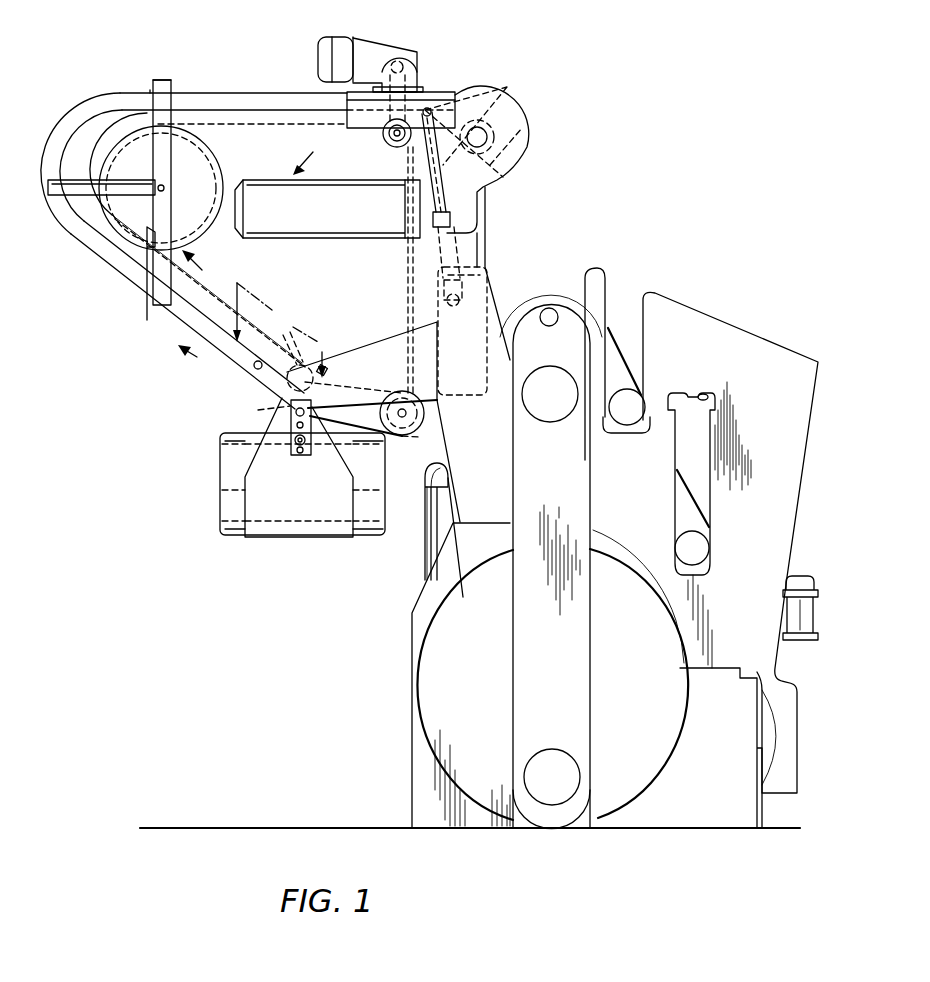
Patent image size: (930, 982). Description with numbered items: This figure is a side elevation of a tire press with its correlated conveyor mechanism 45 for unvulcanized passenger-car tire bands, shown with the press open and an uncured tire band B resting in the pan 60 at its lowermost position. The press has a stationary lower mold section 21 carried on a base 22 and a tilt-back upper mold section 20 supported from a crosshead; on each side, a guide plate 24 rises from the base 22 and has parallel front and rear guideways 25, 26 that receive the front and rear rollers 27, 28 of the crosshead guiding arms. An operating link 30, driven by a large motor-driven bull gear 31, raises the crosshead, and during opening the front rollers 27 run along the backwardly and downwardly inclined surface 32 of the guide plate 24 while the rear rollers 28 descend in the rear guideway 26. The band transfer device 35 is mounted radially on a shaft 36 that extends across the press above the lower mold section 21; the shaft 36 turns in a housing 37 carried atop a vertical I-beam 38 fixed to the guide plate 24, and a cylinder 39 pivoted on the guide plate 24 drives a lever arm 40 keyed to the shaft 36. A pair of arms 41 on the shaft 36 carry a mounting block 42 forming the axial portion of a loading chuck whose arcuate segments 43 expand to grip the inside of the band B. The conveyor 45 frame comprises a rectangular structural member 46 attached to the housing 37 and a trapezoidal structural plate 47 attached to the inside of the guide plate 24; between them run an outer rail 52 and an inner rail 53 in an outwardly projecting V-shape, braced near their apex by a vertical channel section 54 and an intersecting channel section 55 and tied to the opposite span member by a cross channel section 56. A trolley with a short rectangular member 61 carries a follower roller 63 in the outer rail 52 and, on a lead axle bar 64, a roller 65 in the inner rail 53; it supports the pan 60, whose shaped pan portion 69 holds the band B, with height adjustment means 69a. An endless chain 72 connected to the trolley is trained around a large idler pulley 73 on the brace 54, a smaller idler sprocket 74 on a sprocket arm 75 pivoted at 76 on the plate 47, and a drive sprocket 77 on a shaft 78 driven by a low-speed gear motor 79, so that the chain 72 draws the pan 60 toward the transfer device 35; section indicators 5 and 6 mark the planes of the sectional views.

The upper mold section 20 is at (433, 530).
The lower mold section 21 is at (430, 560).
The base 22 is at (697, 830).
The guide plate 24 is at (450, 452).
The front guideway 25 is at (638, 348).
The rear guideway 26 is at (703, 393).
The front roller 27 is at (633, 405).
The rear roller 28 is at (707, 552).
The operating link 30 is at (582, 652).
The bull gear 31 is at (663, 727).
The inclined surface 32 is at (730, 322).
The transfer device 35 is at (308, 154).
The shaft 36 is at (497, 134).
The housing 37 is at (505, 163).
The vertical I-beam 38 is at (477, 240).
The cylinder 39 is at (487, 272).
The lever arm 40 is at (488, 103).
The arms 41 is at (503, 188).
The mounting block 42 is at (432, 222).
The arcuate segments 43 is at (306, 190).
The conveyor mechanism 45 is at (199, 86).
The rectangular structural member 46 is at (415, 107).
The trapezoidal structural plate 47 is at (430, 393).
The outer rail 52 is at (226, 97).
The inner rail 53 is at (262, 118).
The vertical channel section 54 is at (163, 213).
The intersecting channel section 55 is at (72, 194).
The cross channel section 56 is at (148, 90).
The pan 60 is at (293, 520).
The short rectangular member 61 is at (287, 383).
The roller 63 is at (254, 366).
The lead axle bar 64 is at (326, 372).
The roller 65 is at (292, 350).
The pan portion 69 is at (330, 540).
The height adjustment means 69a is at (303, 457).
The endless chain 72 is at (408, 293).
The large idler pulley 73 is at (212, 168).
The smaller idler sprocket 74 is at (420, 437).
The sprocket arm 75 is at (364, 393).
The pivot mounting 76 is at (258, 410).
The drive sprocket 77 is at (391, 146).
The shaft 78 is at (384, 139).
The gear motor 79 is at (385, 48).
The uncured tire band B is at (225, 500).
The section line 5- 5 is at (182, 303).
The section line 6- 6 is at (283, 317).